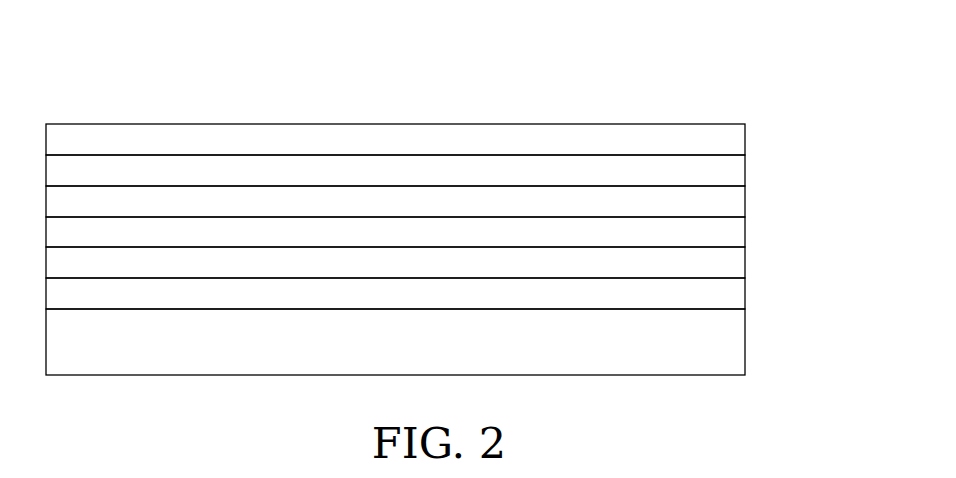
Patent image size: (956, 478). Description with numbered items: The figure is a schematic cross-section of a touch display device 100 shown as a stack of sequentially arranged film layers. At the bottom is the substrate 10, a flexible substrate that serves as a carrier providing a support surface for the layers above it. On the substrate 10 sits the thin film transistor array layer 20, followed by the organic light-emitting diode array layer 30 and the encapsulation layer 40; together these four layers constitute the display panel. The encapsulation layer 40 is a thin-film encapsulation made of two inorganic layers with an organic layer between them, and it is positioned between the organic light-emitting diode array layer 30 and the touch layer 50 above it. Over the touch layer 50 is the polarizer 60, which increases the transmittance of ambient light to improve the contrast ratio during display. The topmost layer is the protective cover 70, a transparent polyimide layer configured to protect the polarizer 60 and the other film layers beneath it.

The touch display device 100 is at (361, 72).
The protective cover 70 is at (723, 138).
The polarizer 60 is at (723, 168).
The touch layer 50 is at (723, 199).
The encapsulation layer 40 is at (723, 230).
The organic light-emitting diode array layer 30 is at (723, 262).
The thin film transistor array layer 20 is at (723, 298).
The substrate 10 is at (723, 358).